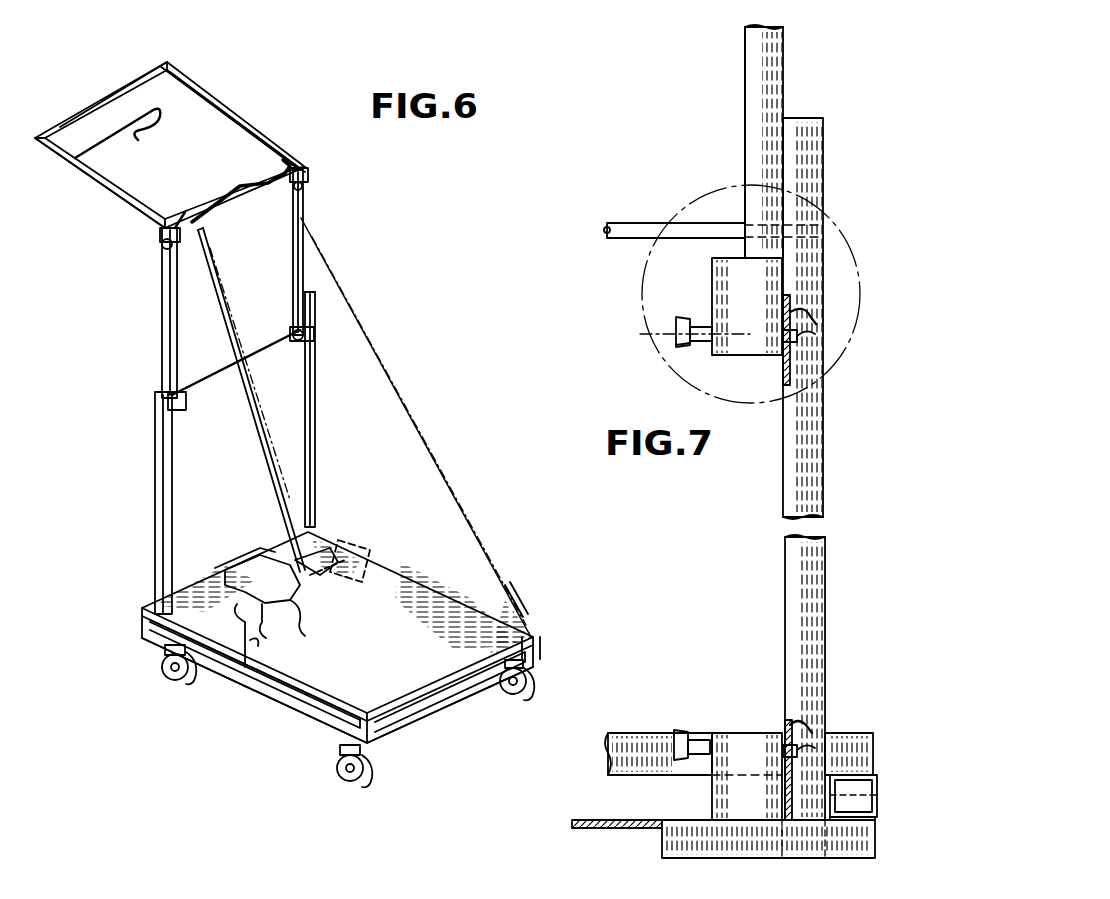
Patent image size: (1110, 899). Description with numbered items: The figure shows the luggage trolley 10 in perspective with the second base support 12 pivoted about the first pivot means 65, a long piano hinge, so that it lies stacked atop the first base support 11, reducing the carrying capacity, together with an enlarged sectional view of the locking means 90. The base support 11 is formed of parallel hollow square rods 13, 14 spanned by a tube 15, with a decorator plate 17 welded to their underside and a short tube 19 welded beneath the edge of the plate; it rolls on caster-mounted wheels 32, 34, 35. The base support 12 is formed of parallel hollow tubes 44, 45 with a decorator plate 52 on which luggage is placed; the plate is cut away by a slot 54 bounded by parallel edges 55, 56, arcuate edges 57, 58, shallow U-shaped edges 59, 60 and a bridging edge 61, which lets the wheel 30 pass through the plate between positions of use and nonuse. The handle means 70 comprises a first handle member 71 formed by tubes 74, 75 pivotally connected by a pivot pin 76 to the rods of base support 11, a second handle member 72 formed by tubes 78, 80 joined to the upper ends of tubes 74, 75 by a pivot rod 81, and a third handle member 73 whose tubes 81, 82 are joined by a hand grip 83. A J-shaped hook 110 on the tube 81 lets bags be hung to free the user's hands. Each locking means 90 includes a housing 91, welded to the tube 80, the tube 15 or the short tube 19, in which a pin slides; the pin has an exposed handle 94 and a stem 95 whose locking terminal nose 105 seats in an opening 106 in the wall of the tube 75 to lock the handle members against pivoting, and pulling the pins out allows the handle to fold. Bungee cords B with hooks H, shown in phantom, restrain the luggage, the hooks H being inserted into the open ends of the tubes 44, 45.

In FIG. 6, the luggage trolley 10 is at (403, 283).
In FIG. 7, the luggage trolley 10 is at (862, 108).
In FIG. 7, the base support 11 is at (610, 846).
In FIG. 6, the base support 12 is at (416, 582).
In FIG. 6, the hollow square rod 13 is at (540, 642).
In FIG. 7, the hollow square rod 13 is at (875, 824).
In FIG. 6, the hollow square rod 14 is at (278, 714).
In FIG. 6, the hollow square rod or tube 15 is at (222, 540).
In FIG. 7, the hollow square rod or tube 15 is at (622, 732).
In FIG. 7, the decorator plate 17 is at (600, 814).
In FIG. 7, the short tube 19 is at (845, 850).
In FIG. 6, the wheel 30 is at (362, 556).
In FIG. 6, the wheel 32 is at (530, 680).
In FIG. 6, the wheel 34 is at (368, 778).
In FIG. 6, the wheel 35 is at (182, 690).
In FIG. 6, the hollow square tube 44 is at (305, 714).
In FIG. 6, the hollow square tube 45 is at (540, 636).
In FIG. 6, the decorator plate 52 is at (372, 647).
In FIG. 6, the slot 54 is at (232, 602).
In FIG. 6, the edge 55 is at (222, 562).
In FIG. 6, the edge 56 is at (260, 532).
In FIG. 6, the arcuate edge 57 is at (248, 672).
In FIG. 6, the arcuate edge 58 is at (332, 530).
In FIG. 6, the U-shaped edge 59 is at (290, 626).
In FIG. 6, the U-shaped edge 60 is at (336, 582).
In FIG. 6, the edge 61 is at (298, 612).
In FIG. 6, the first pivot means 65 is at (455, 695).
In FIG. 6, the handle means 70 is at (368, 232).
In FIG. 7, the handle means 70 is at (856, 474).
In FIG. 6, the first handle member 71 is at (328, 390).
In FIG. 7, the first handle member 71 is at (832, 598).
In FIG. 6, the second handle member 72 is at (318, 273).
In FIG. 7, the second handle member 72 is at (794, 64).
In FIG. 6, the third handle member 73 is at (90, 205).
In FIG. 6, the hollow tube 74 is at (155, 483).
In FIG. 6, the hollow tube 75 is at (318, 440).
In FIG. 7, the hollow tube 75 is at (792, 468).
In FIG. 7, the pivot pin 76 is at (856, 792).
In FIG. 6, the hollow rectangular tube 78 is at (160, 312).
In FIG. 6, the hollow rectangular tube 80 is at (300, 227).
In FIG. 7, the hollow rectangular tube 80 is at (756, 50).
In FIG. 6, the pivot rod 81 is at (124, 200).
In FIG. 7, the pivot rod 81 is at (640, 222).
In FIG. 6, the square tube 82 is at (228, 94).
In FIG. 6, the hand grip 83 is at (100, 90).
In FIG. 6, the locking means 90 is at (312, 140).
In FIG. 7, the locking means 90 is at (746, 382).
In FIG. 7, the housing 91 is at (756, 295).
In FIG. 7, the handle 94 is at (668, 316).
In FIG. 7, the stem 95 is at (688, 352).
In FIG. 7, the locking terminal nose 105 is at (810, 340).
In FIG. 7, the opening 106 is at (815, 308).
In FIG. 6, the J-shaped hook 110 is at (140, 140).
In FIG. 6, the bungee cord B is at (222, 250).
In FIG. 6, the hook H is at (312, 180).